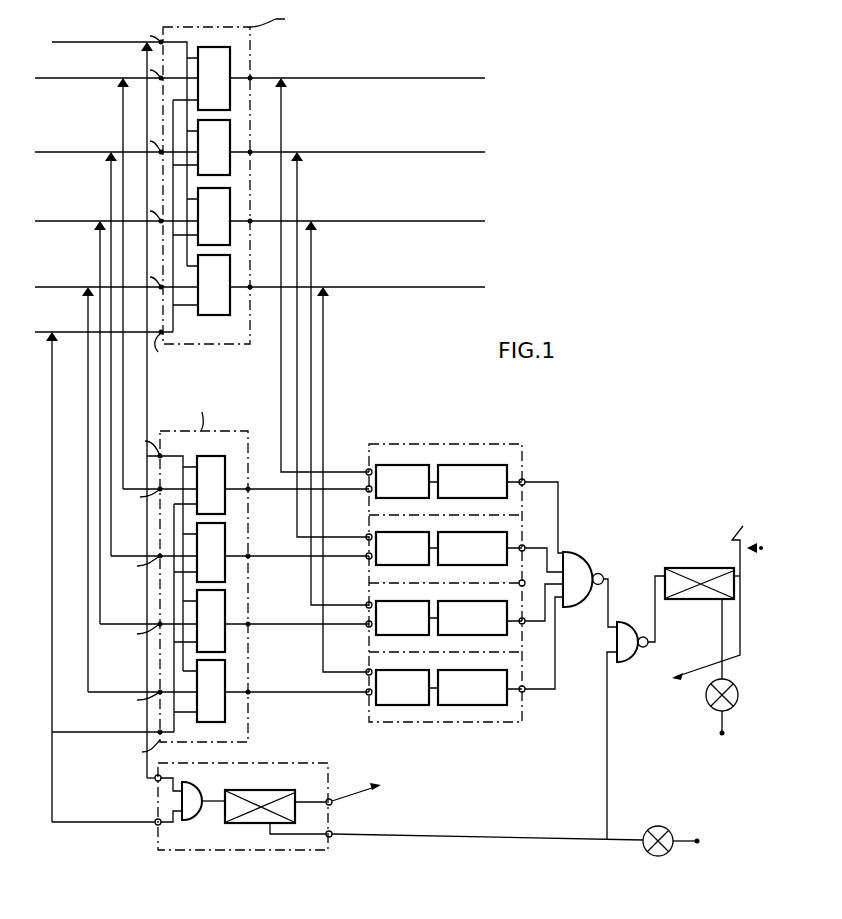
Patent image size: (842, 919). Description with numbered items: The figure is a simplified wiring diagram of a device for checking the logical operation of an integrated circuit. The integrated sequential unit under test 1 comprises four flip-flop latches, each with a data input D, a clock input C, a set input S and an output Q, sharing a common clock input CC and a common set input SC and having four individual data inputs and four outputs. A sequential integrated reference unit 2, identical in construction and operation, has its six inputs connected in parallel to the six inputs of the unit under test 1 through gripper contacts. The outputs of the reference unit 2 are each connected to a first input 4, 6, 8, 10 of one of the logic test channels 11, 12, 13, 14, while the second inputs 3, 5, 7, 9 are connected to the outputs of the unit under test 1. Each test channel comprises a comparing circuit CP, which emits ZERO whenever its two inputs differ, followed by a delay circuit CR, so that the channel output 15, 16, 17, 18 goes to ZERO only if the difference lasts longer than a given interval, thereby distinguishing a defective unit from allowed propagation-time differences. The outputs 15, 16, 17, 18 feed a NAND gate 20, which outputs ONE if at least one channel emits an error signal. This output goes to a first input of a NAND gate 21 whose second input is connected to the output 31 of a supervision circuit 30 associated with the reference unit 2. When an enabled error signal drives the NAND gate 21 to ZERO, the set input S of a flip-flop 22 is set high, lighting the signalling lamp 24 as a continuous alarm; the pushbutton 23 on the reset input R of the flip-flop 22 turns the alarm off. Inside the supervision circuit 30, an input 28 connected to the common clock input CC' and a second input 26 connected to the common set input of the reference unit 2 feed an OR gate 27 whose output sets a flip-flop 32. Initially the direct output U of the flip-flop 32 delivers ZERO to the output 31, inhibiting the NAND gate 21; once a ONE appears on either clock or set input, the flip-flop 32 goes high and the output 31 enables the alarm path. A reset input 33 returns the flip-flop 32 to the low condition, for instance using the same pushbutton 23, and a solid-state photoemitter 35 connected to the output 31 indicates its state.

The integrated sequential unit under test 1 is at (250, 344).
The sequential integrated reference unit 2 is at (258, 744).
The second input of logic test channel 3 is at (367, 470).
The first input of logic test channel 4 is at (366, 492).
The second input of logic test channel 5 is at (367, 535).
The first input of logic test channel 6 is at (366, 559).
The second input of logic test channel 7 is at (367, 603).
The first input of logic test channel 8 is at (366, 627).
The second input of logic test channel 9 is at (367, 670).
The first input of logic test channel 10 is at (366, 695).
The logic test channel 11 is at (522, 444).
The logic test channel 12 is at (516, 526).
The logic test channel 13 is at (514, 598).
The logic test channel 14 is at (512, 724).
The output of test channel 15 is at (531, 472).
The output of test channel 16 is at (525, 551).
The output of test channel 17 is at (525, 624).
The output of test channel 18 is at (531, 678).
The NAND gate 20 is at (585, 572).
The NAND gate 21 is at (635, 660).
The flip-flop 22 is at (692, 576).
The pushbutton 23 is at (716, 605).
The signalling lamp 24 is at (707, 705).
The input terminal 26 is at (155, 826).
The OR gate 27 is at (198, 793).
The input of supervision circuit 28 is at (150, 782).
The supervision circuit 30 is at (318, 763).
The output of supervision circuit 31 is at (330, 838).
The flip-flop 32 is at (285, 778).
The reset input 33 is at (330, 806).
The solid-state photoemitter 35 is at (666, 854).